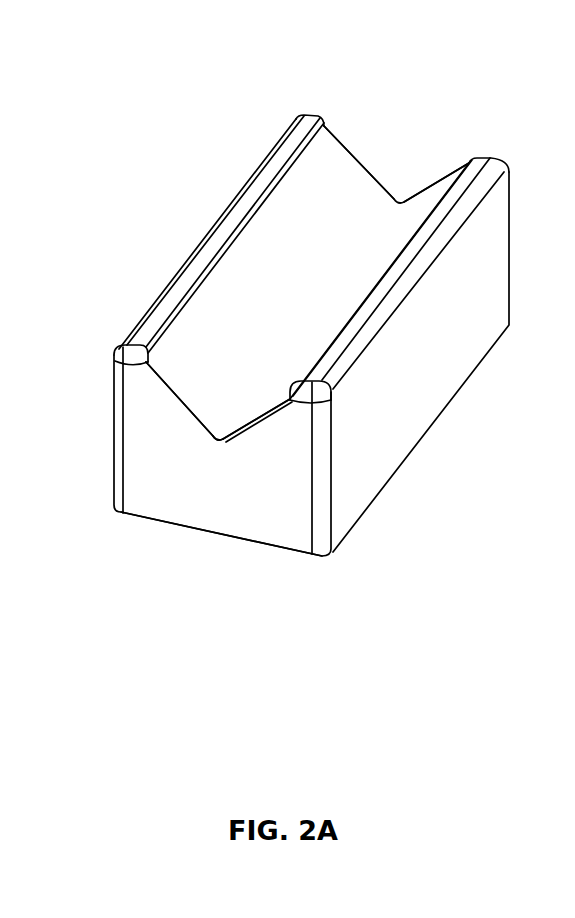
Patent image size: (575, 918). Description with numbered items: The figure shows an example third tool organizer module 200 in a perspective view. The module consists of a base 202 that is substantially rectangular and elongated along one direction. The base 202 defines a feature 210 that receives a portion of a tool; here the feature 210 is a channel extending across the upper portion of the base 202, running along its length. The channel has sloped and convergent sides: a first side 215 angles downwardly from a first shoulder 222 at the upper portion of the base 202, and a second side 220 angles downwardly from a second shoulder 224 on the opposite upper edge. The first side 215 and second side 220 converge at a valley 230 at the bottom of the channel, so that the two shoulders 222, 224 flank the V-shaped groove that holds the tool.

The third tool organizer module 200 is at (191, 645).
The base 202 is at (338, 551).
The feature 210 is at (391, 158).
The first side 215 is at (252, 306).
The second side 220 is at (397, 237).
The first shoulder 222 is at (287, 155).
The second shoulder 224 is at (481, 158).
The valley 230 is at (240, 400).